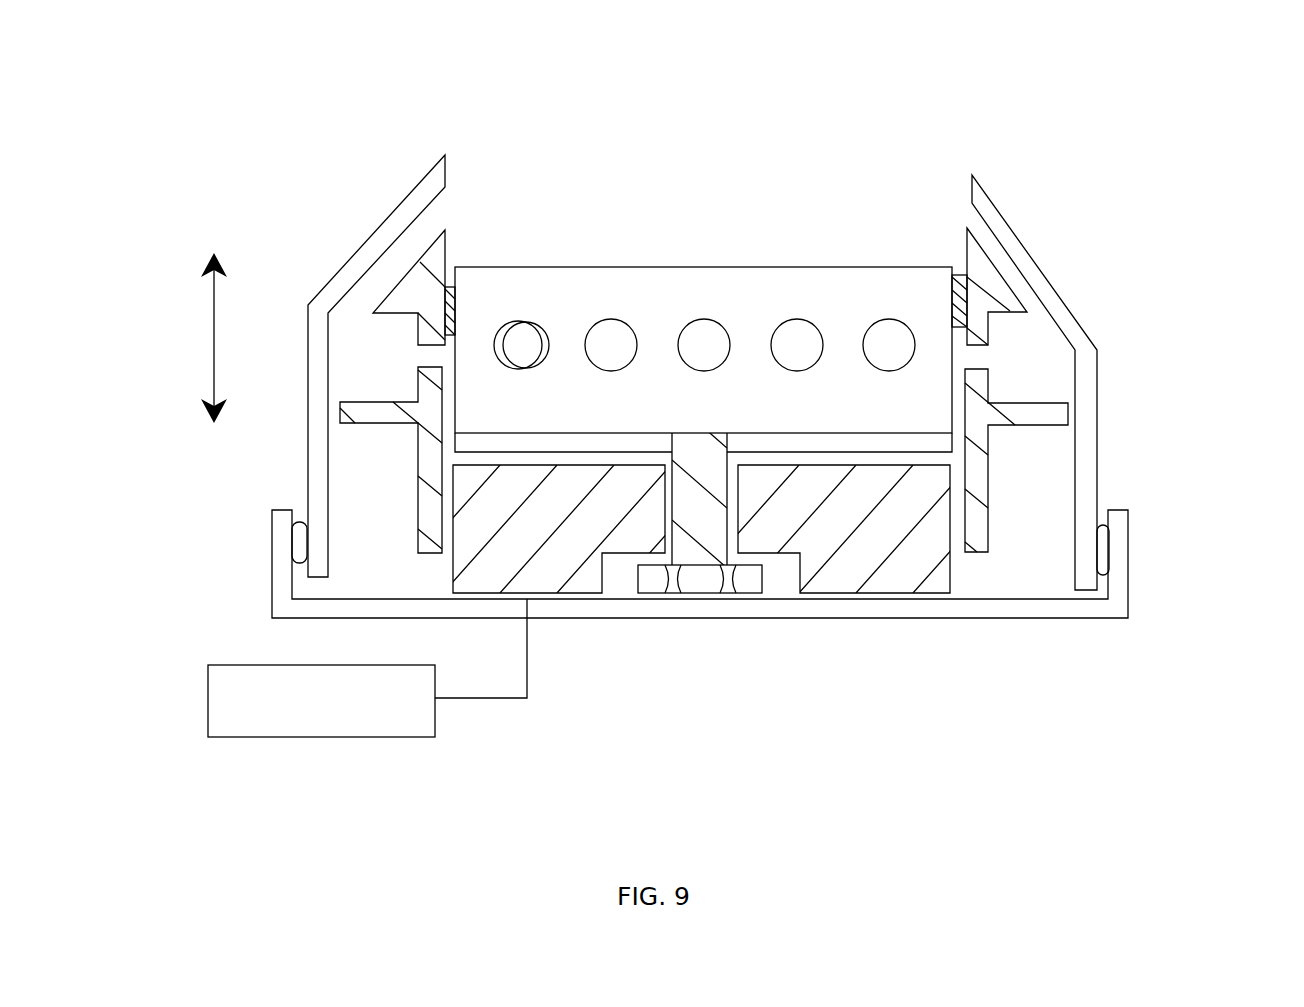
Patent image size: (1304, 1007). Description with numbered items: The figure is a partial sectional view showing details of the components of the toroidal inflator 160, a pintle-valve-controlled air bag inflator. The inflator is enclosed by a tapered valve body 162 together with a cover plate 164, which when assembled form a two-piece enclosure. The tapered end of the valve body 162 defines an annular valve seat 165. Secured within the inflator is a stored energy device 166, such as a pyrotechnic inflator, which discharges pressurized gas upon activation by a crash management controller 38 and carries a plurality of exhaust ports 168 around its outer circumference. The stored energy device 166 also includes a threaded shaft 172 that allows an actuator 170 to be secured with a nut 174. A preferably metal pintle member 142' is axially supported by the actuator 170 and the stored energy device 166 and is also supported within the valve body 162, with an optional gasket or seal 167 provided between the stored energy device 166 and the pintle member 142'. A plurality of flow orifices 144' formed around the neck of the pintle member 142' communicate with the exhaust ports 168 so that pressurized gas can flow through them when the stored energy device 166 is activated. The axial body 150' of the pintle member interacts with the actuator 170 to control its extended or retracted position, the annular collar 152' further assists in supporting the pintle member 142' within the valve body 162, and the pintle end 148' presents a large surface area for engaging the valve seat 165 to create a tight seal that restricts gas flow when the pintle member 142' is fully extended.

The toroidal inflator 160 is at (1090, 113).
The tapered valve body 162 is at (746, 361).
The cover plate 164 is at (1076, 608).
The annular valve seat 165 is at (390, 243).
The stored energy device 166 is at (703, 314).
The gasket or seal 167 is at (449, 287).
The exhaust ports 168 is at (795, 350).
The pintle member 142' is at (353, 287).
The flow orifices 144' is at (767, 423).
The pintle end 148' is at (956, 246).
The axial body 150' is at (1020, 479).
The annular collar 152' is at (1123, 446).
The actuator 170 is at (920, 568).
The threaded shaft 172 is at (712, 528).
The nut 174 is at (700, 585).
The CMC controller 38 is at (328, 737).